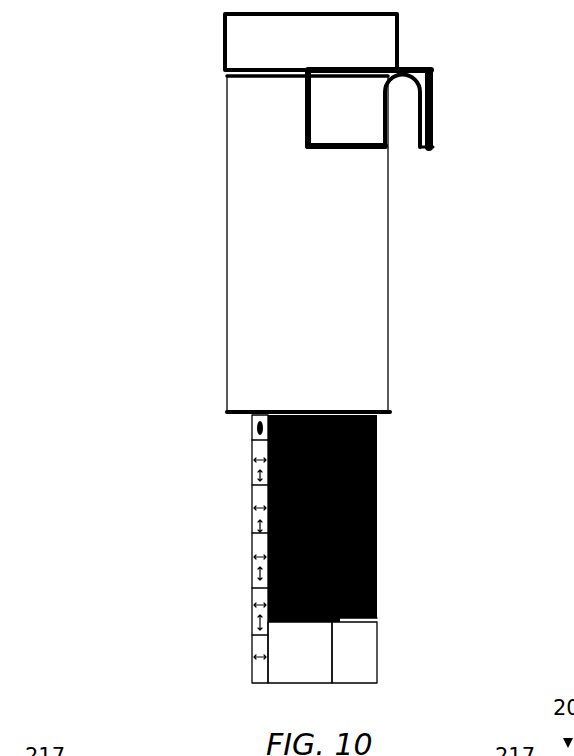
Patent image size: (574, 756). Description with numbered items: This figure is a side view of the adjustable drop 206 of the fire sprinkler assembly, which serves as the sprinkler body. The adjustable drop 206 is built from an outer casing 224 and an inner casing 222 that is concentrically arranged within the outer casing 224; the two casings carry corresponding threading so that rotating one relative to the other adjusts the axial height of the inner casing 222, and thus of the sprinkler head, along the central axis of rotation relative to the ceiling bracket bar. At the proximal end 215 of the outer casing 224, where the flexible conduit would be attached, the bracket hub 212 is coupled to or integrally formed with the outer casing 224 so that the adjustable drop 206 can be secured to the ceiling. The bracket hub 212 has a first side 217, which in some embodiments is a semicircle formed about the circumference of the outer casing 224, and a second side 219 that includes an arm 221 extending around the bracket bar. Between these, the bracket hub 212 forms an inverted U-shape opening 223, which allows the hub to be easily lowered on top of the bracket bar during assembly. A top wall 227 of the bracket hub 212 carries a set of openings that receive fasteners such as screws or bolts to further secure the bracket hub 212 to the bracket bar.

The adjustable drop 206 is at (90, 83).
The proximal end 215 is at (208, 23).
The top wall 227 is at (413, 72).
The bracket hub 212 is at (317, 102).
The first side 217 is at (305, 137).
The second side 219 is at (435, 78).
The arm 221 is at (435, 137).
The inverted U-shape opening 223 is at (407, 146).
The outer casing 224 is at (237, 195).
The inner casing 222 is at (260, 448).